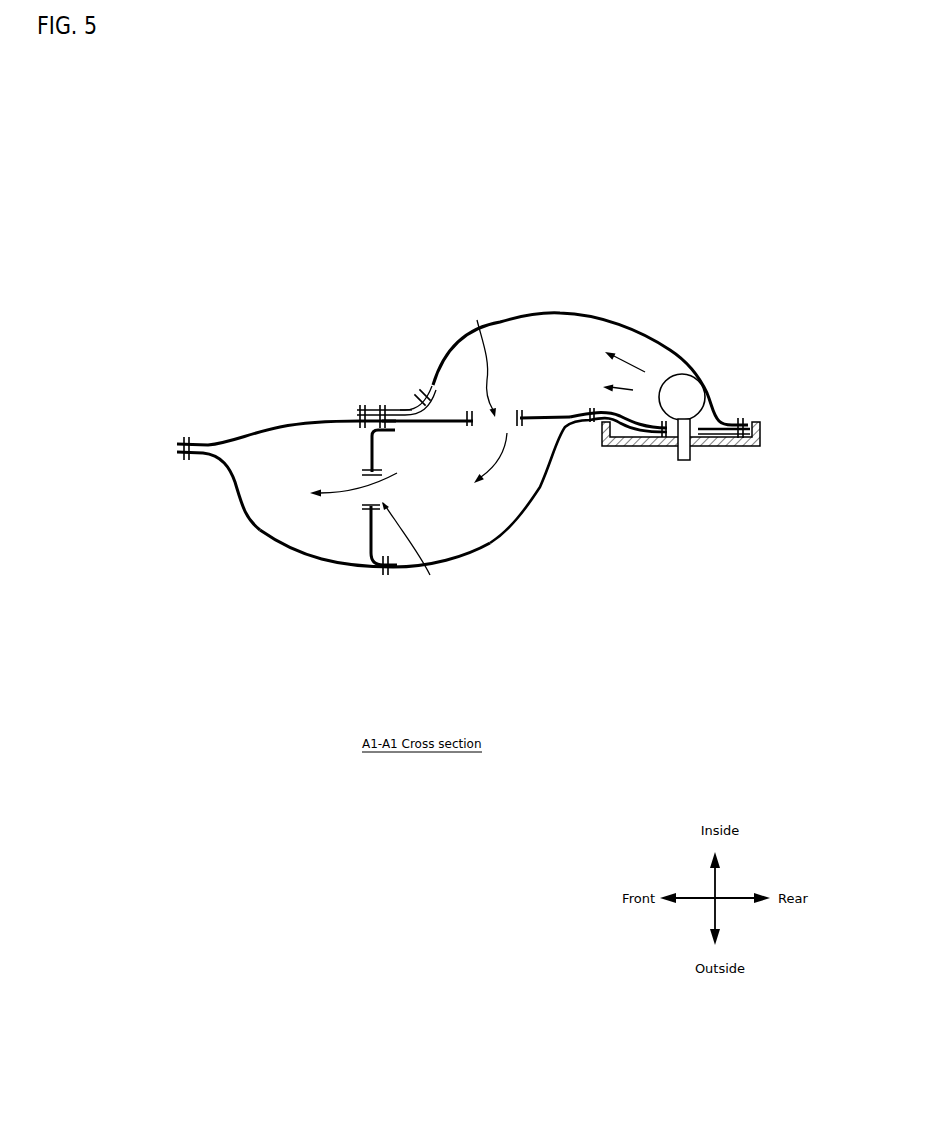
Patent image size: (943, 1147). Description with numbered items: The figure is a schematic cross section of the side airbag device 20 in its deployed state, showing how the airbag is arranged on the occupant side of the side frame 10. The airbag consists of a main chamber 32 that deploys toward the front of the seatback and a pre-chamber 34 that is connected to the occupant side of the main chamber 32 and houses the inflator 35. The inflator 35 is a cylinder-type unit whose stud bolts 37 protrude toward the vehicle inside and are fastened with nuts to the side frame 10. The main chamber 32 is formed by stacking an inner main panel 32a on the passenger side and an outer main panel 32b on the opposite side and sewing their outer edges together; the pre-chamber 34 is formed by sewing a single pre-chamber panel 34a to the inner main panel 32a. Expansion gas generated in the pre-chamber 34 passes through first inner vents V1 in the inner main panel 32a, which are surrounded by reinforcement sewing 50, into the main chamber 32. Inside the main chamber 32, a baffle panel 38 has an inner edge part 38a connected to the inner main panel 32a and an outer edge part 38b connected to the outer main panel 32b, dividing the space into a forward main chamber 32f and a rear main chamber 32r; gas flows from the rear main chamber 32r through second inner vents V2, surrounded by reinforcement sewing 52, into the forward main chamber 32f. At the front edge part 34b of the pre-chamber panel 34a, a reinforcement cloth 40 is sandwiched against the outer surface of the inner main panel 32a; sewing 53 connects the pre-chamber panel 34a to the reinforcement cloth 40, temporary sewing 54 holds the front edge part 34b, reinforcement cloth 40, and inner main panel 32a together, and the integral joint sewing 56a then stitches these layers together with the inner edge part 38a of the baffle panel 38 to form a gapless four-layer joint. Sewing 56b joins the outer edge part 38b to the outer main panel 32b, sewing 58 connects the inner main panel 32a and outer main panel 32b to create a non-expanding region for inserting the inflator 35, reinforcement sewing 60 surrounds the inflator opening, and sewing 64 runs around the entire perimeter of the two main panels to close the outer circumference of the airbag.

The side airbag device 20 is at (271, 270).
The side frame 10 is at (630, 447).
The main chamber 32 is at (267, 517).
The inner main panel 32a is at (288, 421).
The outer main panel 32b is at (518, 527).
The forward main chamber 32f is at (273, 467).
The rear main chamber 32r is at (528, 487).
The pre-chamber 34 is at (682, 282).
The pre-chamber panel 34a is at (590, 312).
The front edge part 34b is at (360, 410).
The inflator 35 is at (683, 374).
The stud bolt 37 is at (687, 462).
The baffle panel 38 is at (370, 533).
The inner edge part 38a is at (387, 422).
The outer edge part 38b is at (397, 570).
The reinforcement cloth 40 is at (408, 410).
The reinforcement sewing 50 is at (523, 411).
The reinforcement sewing 52 is at (372, 510).
The sewing 53 is at (420, 392).
The temporary sewing 54 is at (360, 408).
The integral joint sewing 56a is at (386, 410).
The sewing 56b is at (383, 572).
The sewing 58 is at (588, 426).
The reinforcement sewing 60 is at (717, 447).
The sewing 64 is at (188, 438).
The first inner vent V1 is at (481, 356).
The second inner vent V2 is at (415, 547).